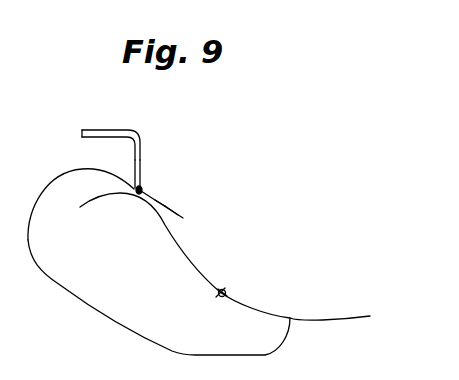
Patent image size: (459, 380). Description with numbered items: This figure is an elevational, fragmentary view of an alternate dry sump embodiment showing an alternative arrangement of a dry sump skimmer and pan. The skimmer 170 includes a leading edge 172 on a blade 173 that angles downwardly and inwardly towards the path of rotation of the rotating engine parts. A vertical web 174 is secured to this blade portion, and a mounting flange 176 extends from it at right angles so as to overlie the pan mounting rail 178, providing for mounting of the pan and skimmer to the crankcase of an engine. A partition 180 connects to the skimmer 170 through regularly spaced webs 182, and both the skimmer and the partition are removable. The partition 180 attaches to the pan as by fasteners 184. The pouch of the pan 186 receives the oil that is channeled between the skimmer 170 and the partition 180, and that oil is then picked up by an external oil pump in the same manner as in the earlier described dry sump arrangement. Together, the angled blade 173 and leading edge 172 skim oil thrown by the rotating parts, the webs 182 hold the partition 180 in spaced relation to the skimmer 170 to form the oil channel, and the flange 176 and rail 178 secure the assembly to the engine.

The skimmer 170 is at (173, 208).
The leading edge 172 is at (183, 218).
The blade 173 is at (162, 202).
The vertical web 174 is at (141, 153).
The mounting flange 176 is at (108, 129).
The pan mounting rail 178 is at (103, 138).
The partition 180 is at (190, 262).
The webs 182 is at (151, 197).
The fasteners 184 is at (227, 287).
The pan 186 is at (150, 278).